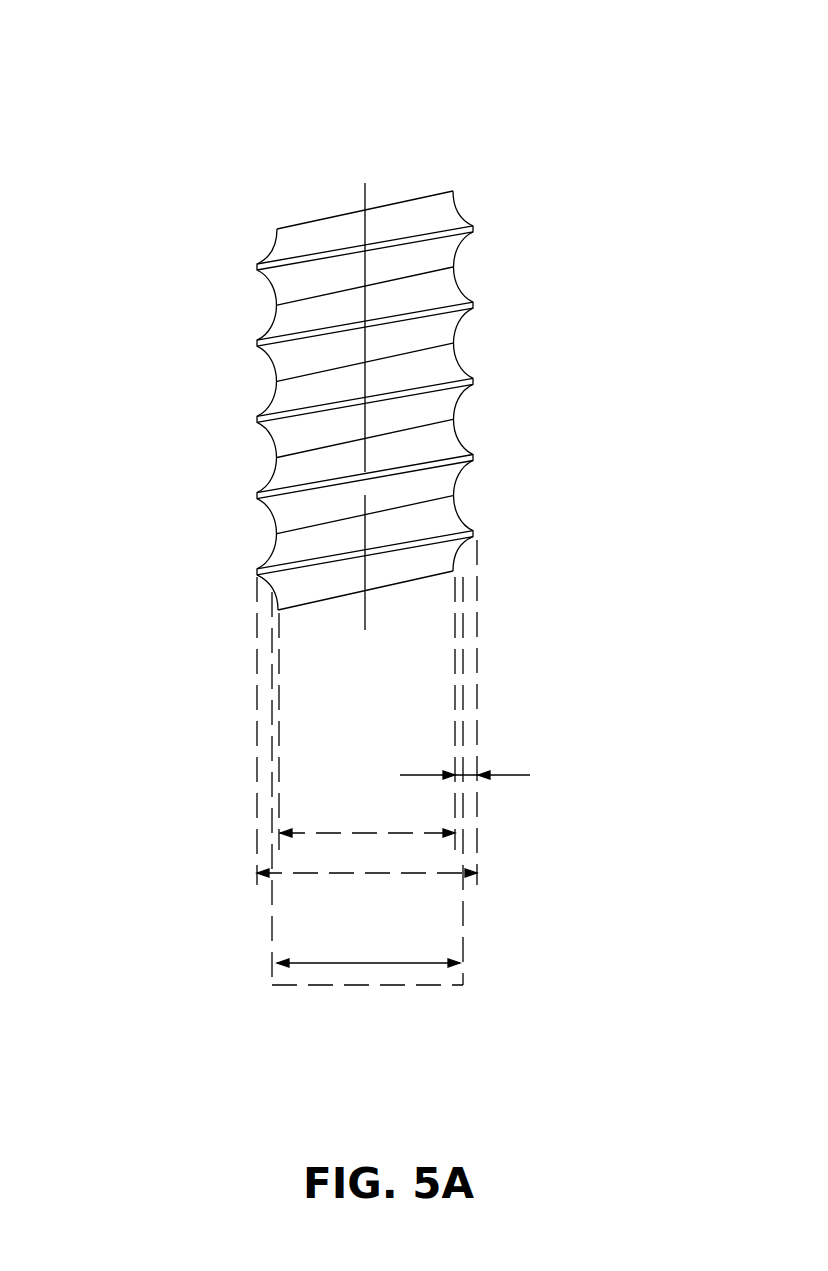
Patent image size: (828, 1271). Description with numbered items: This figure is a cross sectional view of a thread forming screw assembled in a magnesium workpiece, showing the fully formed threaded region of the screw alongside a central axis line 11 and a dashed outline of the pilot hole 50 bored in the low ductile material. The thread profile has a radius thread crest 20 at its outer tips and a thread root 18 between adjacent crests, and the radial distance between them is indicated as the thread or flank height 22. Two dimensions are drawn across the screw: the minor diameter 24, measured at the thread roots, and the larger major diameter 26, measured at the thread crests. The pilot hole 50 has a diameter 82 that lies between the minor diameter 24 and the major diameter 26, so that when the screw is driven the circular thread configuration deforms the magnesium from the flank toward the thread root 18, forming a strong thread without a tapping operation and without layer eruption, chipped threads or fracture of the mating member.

The longitudinal axis of threaded body 11 is at (370, 175).
The thread root 18 is at (265, 308).
The radius thread crest 20 is at (248, 268).
The thread or flank height 22 is at (477, 761).
The minor diameter 24 is at (398, 822).
The major diameter 26 is at (383, 867).
The pilot hole 50 is at (502, 1018).
The diameter 82 is at (379, 957).